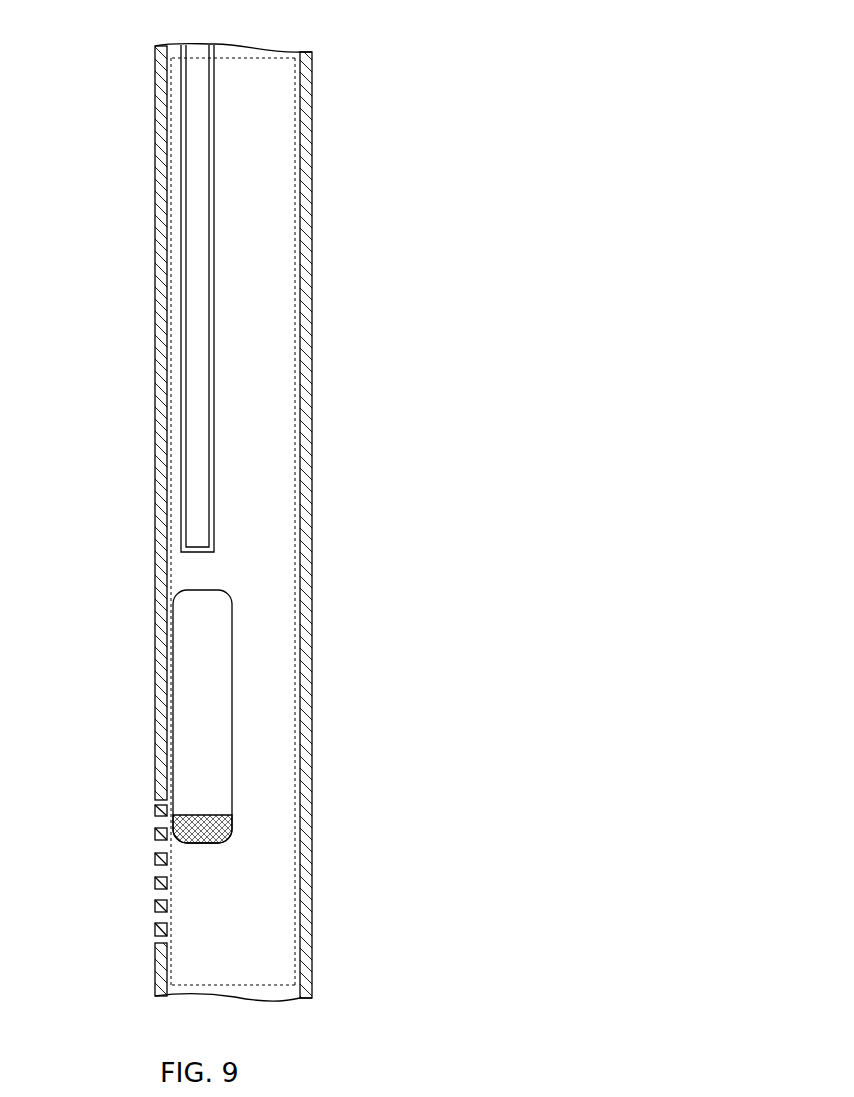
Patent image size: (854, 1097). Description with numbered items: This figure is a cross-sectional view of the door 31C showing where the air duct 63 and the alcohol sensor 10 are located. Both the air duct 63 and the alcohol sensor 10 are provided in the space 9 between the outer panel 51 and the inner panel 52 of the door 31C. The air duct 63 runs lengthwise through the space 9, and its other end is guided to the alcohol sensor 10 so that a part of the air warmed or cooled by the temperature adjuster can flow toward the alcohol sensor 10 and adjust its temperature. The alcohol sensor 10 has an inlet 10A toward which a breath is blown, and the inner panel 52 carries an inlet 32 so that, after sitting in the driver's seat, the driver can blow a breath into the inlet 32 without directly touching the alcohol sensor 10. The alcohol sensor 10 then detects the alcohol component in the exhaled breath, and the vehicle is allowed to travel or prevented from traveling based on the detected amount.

The door 31C is at (384, 88).
The space 9 is at (312, 212).
The air duct 63 is at (192, 352).
The inner panel 52 is at (155, 628).
The outer panel 51 is at (312, 623).
The alcohol sensor 10 is at (213, 712).
The inlet 10A is at (202, 849).
The inlet 32 is at (136, 874).